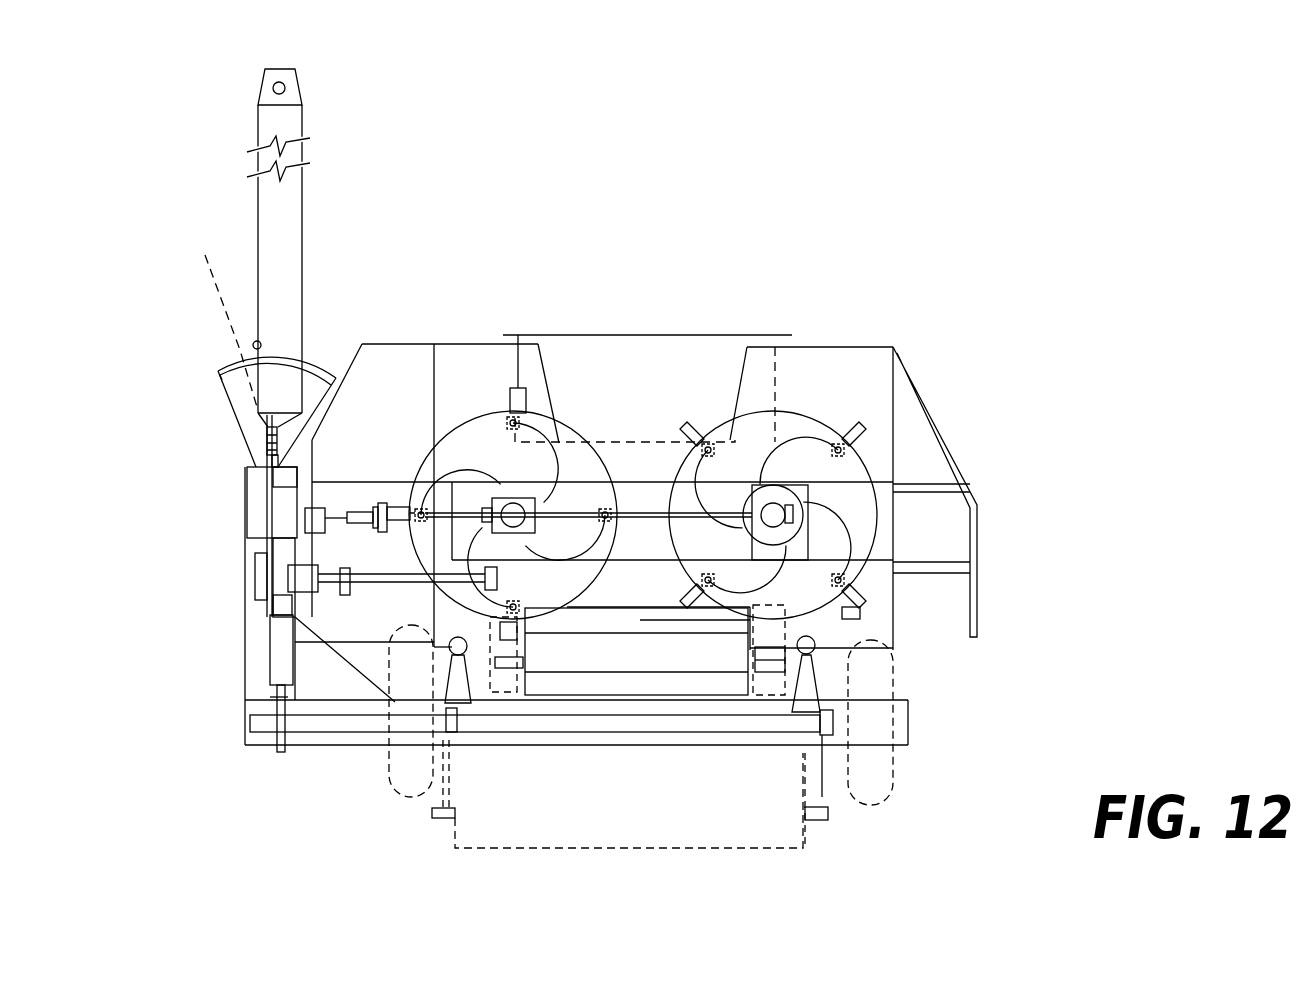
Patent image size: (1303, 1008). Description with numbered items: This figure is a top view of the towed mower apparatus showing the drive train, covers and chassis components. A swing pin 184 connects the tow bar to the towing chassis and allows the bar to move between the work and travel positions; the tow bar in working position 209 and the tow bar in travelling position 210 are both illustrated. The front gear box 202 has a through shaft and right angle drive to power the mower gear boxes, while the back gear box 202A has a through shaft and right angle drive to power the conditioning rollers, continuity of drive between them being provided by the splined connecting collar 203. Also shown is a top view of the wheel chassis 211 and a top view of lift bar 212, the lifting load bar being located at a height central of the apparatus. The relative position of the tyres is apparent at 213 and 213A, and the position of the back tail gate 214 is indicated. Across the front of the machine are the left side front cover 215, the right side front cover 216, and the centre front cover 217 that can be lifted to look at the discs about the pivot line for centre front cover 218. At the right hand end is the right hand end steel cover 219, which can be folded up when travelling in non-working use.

The swing pin 184 is at (262, 447).
The front gear box 202 is at (262, 517).
The back gear box 202A is at (263, 585).
The splined connecting collar 203 is at (258, 553).
The tow bar in working position 209 is at (230, 308).
The tow bar in travelling position 210 is at (286, 405).
The top view of the wheel chassis 211 is at (905, 730).
The top view of lift bar 212 is at (342, 720).
The relative position of the tyres 213 is at (893, 805).
The relative position of the tyres 213A is at (400, 795).
The position of the back tail gate 214 is at (665, 802).
The left side front cover 215 is at (383, 368).
The right side front cover 216 is at (828, 367).
The centre front cover 217 is at (658, 355).
The pivot line for centre front cover 218 is at (236, 382).
The right hand end steel cover 219 is at (948, 538).